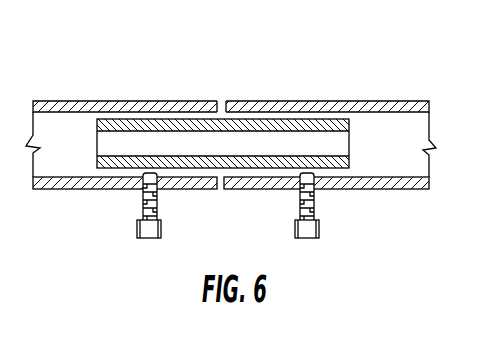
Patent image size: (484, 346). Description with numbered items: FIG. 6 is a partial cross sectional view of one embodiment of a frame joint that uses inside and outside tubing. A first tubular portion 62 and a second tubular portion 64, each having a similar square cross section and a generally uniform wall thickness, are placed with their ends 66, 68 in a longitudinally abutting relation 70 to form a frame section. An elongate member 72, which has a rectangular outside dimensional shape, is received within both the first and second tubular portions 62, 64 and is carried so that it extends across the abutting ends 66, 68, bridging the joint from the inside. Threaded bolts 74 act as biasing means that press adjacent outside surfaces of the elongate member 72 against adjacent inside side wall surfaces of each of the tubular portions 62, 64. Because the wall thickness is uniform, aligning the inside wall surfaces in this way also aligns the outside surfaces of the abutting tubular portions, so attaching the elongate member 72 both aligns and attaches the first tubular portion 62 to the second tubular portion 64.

The first tubular portion 62 is at (362, 94).
The second tubular portion 64 is at (100, 93).
The end of first tubular portion 66 is at (262, 100).
The end of second tubular portion 68 is at (215, 100).
The longitudinally abutting relation 70 is at (232, 150).
The elongate member 72 is at (96, 171).
The threaded bolt 74 is at (151, 234).